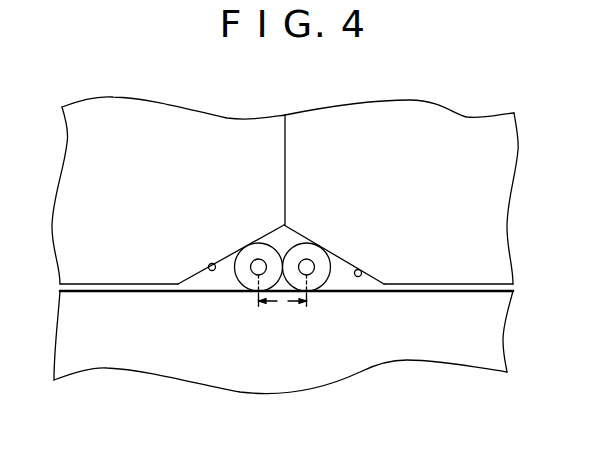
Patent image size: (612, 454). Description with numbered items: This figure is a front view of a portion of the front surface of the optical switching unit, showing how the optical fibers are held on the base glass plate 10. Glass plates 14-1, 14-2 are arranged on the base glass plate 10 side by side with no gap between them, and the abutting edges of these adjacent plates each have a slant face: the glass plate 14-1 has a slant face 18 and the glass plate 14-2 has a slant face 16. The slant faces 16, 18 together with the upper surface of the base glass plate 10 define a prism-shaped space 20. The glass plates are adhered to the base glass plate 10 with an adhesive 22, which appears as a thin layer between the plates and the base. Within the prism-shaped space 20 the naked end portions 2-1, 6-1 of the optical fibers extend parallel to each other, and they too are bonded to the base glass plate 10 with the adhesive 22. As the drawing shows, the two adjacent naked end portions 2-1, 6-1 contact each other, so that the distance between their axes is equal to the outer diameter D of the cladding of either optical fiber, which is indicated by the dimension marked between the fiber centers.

The glass plate 14-1 is at (145, 108).
The glass plate 14-2 is at (392, 108).
The naked end portion 2-1 is at (247, 247).
The naked end portion 6-1 is at (319, 246).
The slant face 18 is at (208, 265).
The slant face 16 is at (361, 271).
The adhesive 22 is at (152, 292).
The prism-shaped space 20 is at (221, 286).
The outer diameter of the cladding D is at (281, 301).
The base glass plate 10 is at (287, 389).